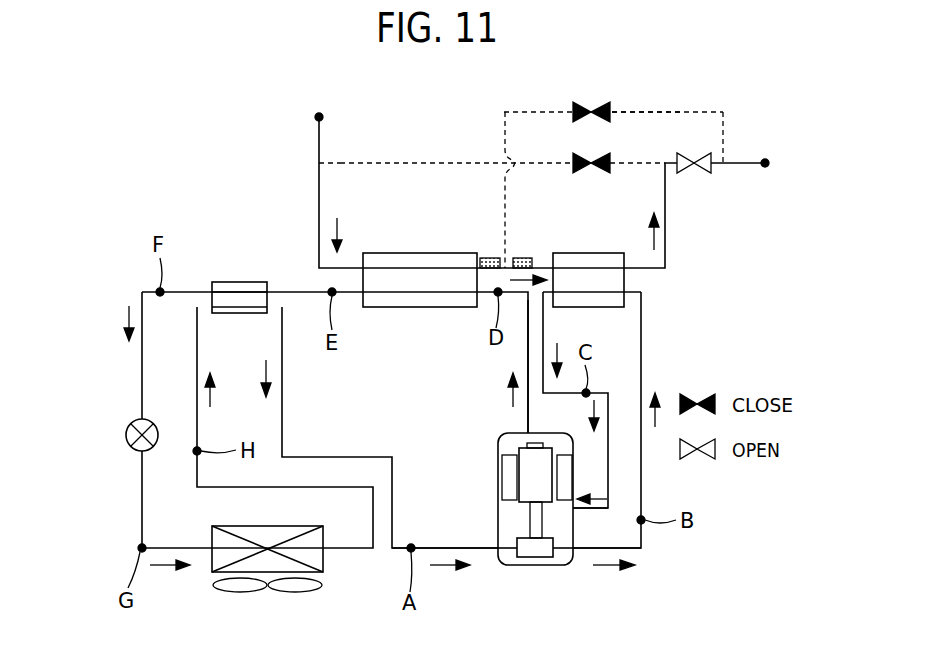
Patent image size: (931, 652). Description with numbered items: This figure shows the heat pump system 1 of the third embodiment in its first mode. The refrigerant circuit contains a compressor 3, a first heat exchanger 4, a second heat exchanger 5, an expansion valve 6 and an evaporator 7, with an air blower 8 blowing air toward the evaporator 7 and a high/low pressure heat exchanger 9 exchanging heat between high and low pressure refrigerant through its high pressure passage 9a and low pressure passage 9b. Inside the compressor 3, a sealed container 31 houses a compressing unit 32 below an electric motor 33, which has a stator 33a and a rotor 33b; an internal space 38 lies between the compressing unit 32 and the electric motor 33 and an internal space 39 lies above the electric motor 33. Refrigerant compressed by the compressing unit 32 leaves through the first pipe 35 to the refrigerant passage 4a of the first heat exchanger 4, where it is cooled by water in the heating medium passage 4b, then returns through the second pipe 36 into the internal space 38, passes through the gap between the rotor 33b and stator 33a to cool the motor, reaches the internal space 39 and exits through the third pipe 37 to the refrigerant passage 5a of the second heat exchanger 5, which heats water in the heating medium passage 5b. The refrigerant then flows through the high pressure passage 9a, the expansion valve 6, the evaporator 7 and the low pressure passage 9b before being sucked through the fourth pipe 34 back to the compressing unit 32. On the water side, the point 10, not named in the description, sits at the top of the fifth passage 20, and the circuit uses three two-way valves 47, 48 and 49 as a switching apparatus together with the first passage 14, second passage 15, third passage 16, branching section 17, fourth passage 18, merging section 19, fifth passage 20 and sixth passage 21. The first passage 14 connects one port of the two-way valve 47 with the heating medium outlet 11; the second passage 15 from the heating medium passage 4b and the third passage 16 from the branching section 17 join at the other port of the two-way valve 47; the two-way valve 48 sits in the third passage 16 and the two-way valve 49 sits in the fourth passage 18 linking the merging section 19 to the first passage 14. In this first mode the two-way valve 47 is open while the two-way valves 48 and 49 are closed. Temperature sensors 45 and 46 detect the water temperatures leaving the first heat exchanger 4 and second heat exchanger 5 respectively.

The heat pump system 1 is at (452, 104).
The compressor 3 is at (483, 440).
The first heat exchanger 4 is at (589, 253).
The refrigerant passage 4a is at (613, 294).
The heating medium passage 4b is at (562, 253).
The second heat exchanger 5 is at (441, 253).
The refrigerant passage 5a is at (398, 295).
The heating medium passage 5b is at (378, 253).
The expansion valve 6 is at (132, 424).
The evaporator 7 is at (305, 526).
The air blower 8 is at (324, 585).
The high/low pressure heat exchanger 9 is at (250, 282).
The high pressure passage 9a is at (218, 290).
The low pressure passage 9b is at (240, 308).
The inlet port 10 is at (317, 117).
The heating medium outlet 11 is at (765, 158).
The first passage 14 is at (738, 160).
The second passage 15 is at (658, 272).
The third passage 16 is at (418, 160).
The branching section 17 is at (321, 163).
The fourth passage 18 is at (625, 112).
The merging section 19 is at (503, 257).
The fifth passage 20 is at (318, 208).
The sixth passage 21 is at (540, 257).
The sealed container 31 is at (508, 435).
The compressing unit 32 is at (516, 540).
The electric motor 33 is at (437, 445).
The stator 33a is at (505, 460).
The rotor 33b is at (527, 490).
The fourth pipe 34 is at (483, 550).
The first pipe 35 is at (590, 550).
The second pipe 36 is at (585, 510).
The third pipe 37 is at (530, 417).
The internal space 38 is at (558, 525).
The internal space 39 is at (510, 428).
The temperature sensor 45 is at (525, 257).
The temperature sensor 46 is at (487, 257).
The two-way valve 47 is at (680, 158).
The two-way valve 48 is at (596, 172).
The two-way valve 49 is at (596, 106).